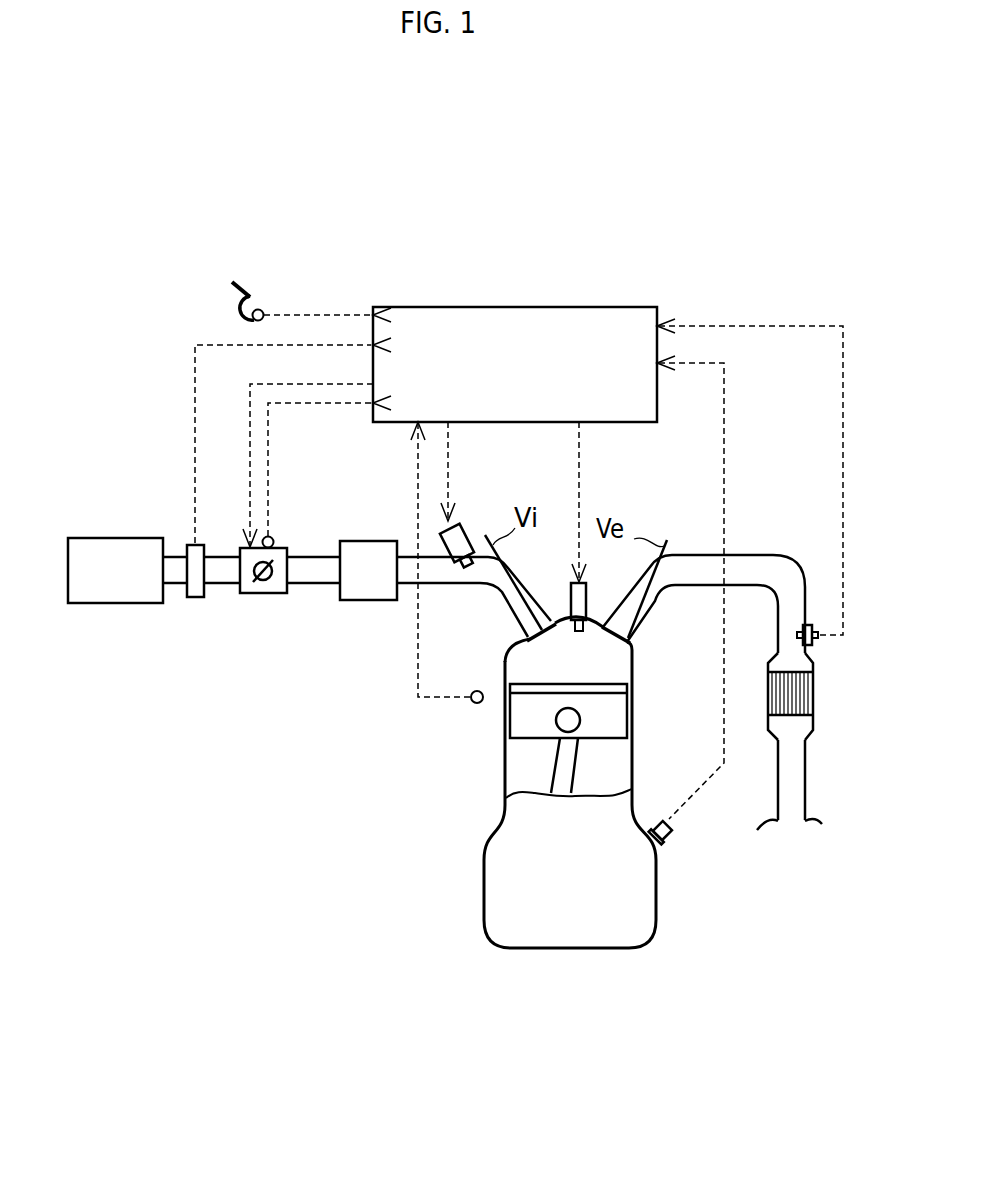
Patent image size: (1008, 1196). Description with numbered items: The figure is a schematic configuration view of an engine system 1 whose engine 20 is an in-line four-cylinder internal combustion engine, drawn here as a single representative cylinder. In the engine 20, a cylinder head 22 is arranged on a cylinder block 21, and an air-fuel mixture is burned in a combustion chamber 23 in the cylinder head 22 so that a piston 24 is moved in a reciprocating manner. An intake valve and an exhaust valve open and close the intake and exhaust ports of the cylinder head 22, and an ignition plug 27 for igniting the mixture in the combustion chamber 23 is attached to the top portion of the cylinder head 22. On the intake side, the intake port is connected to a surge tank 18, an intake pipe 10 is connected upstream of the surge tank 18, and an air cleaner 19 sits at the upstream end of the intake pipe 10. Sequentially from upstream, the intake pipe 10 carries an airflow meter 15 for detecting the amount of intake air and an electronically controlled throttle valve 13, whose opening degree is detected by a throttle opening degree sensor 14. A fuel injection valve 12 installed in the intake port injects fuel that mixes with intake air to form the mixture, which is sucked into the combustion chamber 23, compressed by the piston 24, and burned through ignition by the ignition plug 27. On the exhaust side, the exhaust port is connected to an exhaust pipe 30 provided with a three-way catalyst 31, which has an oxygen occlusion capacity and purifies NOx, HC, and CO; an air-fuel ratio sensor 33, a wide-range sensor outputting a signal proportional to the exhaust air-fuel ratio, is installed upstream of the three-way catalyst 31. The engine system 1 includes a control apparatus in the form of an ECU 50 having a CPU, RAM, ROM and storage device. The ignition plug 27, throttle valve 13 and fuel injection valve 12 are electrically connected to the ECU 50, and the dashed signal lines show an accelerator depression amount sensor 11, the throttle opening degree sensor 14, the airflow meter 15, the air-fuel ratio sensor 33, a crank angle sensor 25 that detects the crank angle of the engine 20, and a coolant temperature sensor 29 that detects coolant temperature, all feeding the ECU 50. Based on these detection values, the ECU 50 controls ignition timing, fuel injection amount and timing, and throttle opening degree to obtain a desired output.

The engine system 1 is at (850, 308).
The intake pipe 10 is at (327, 555).
The accelerator depression amount sensor 11 is at (263, 304).
The fuel injection valve 12 is at (464, 530).
The throttle valve 13 is at (283, 593).
The throttle opening degree sensor 14 is at (276, 538).
The airflow meter 15 is at (195, 597).
The surge tank 18 is at (360, 537).
The air cleaner 19 is at (114, 538).
The engine 20 is at (548, 748).
The cylinder block 21 is at (507, 851).
The cylinder head 22 is at (634, 645).
The combustion chamber 23 is at (603, 668).
The piston 24 is at (618, 732).
The crank angle sensor 25 is at (668, 841).
The ignition plug 27 is at (593, 587).
The coolant temperature sensor 29 is at (477, 703).
The exhaust pipe 30 is at (750, 553).
The three-way catalyst 31 is at (808, 692).
The air-fuel ratio sensor 33 is at (810, 622).
The ECU 50 is at (657, 307).